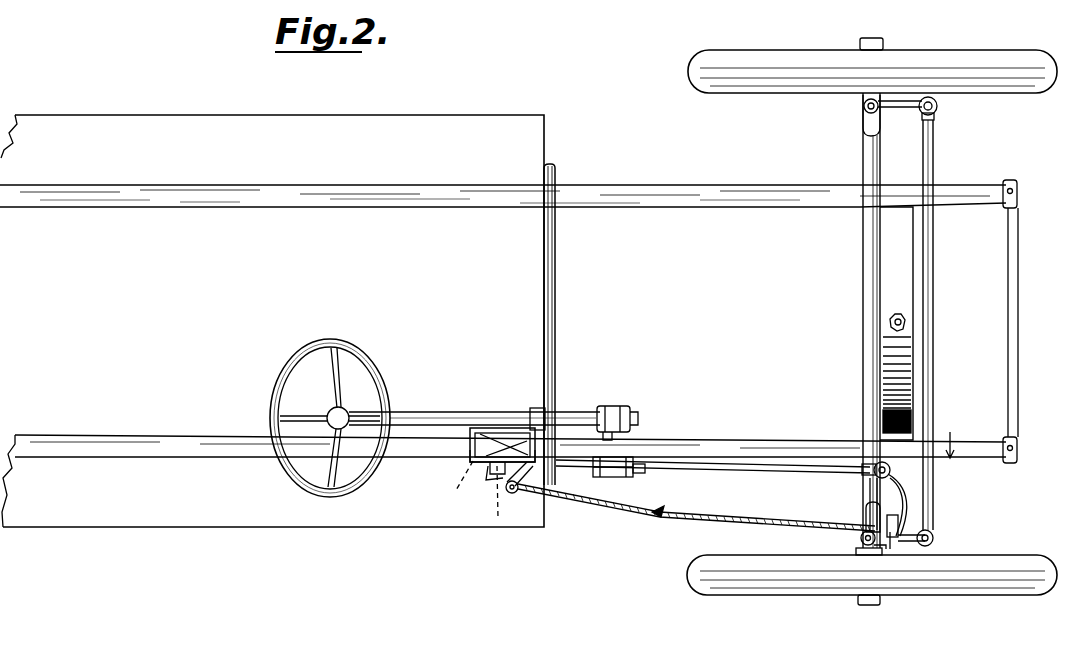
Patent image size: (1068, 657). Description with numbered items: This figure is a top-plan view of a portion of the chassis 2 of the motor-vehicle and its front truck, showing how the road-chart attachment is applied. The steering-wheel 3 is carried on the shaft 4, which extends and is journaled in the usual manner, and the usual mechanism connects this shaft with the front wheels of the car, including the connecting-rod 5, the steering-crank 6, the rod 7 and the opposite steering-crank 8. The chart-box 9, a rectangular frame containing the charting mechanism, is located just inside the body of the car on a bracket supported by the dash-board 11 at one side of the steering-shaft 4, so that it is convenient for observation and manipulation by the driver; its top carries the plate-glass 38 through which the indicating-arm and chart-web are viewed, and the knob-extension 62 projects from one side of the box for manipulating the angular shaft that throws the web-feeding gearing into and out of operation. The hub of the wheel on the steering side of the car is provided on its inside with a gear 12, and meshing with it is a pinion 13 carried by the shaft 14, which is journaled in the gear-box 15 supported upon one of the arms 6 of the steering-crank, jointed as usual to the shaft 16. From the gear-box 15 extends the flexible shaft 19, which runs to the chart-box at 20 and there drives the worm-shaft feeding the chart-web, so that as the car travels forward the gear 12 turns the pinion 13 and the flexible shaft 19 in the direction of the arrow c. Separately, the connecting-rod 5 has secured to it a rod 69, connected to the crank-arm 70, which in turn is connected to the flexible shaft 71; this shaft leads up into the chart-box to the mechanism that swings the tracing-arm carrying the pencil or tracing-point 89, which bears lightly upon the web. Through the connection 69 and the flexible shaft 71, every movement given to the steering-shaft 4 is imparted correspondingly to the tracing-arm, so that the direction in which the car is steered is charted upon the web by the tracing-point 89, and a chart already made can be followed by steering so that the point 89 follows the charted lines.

The chassis 2 is at (722, 201).
The steering-wheel 3 is at (380, 383).
The shaft 4 is at (452, 412).
The connecting-rod 5 is at (786, 473).
The steering-crank 6 is at (905, 500).
The rod 7 is at (930, 343).
The opposite steering-crank 8 is at (906, 110).
The chart-box 9 is at (470, 462).
The dash-board 11 is at (556, 340).
The gear 12 is at (835, 549).
The pinion 13 is at (906, 548).
The shaft 14 is at (930, 548).
The gear-box 15 is at (898, 527).
The shaft 16 is at (870, 496).
The flexible shaft 19 is at (822, 523).
The connection of flexible shaft to chart-box 20 is at (494, 474).
The plate-glass 38 is at (492, 440).
The knob-extension 62 is at (490, 466).
The rod 69 is at (598, 478).
The crank-arm 70 is at (498, 518).
The flexible shaft 71 is at (518, 491).
The tracing-point 89 is at (455, 492).